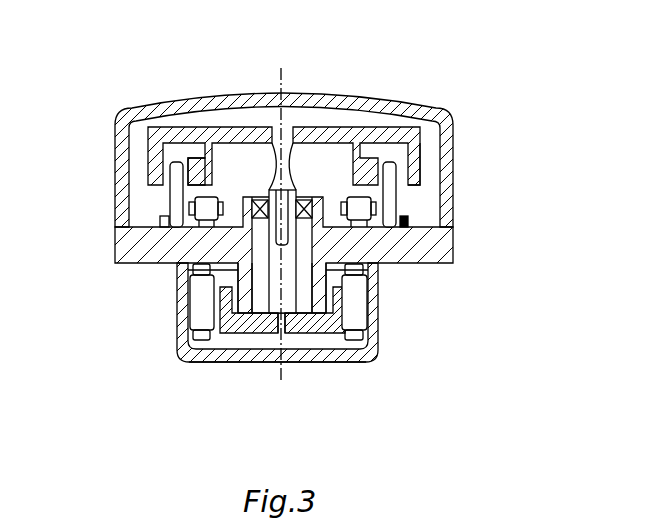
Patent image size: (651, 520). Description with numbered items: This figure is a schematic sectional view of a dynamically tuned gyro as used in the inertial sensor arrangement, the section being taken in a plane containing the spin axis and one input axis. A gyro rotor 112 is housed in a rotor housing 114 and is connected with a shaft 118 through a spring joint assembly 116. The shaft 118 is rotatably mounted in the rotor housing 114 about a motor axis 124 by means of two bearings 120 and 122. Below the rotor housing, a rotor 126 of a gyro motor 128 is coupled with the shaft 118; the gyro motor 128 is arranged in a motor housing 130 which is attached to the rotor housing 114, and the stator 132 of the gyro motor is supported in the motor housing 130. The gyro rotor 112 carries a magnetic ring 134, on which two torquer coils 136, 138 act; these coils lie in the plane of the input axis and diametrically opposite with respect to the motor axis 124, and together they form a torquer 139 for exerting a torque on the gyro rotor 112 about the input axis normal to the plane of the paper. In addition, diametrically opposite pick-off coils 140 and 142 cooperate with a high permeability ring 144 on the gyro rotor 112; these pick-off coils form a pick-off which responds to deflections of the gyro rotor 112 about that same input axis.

The gyro rotor 112 is at (332, 107).
The rotor housing 114 is at (447, 168).
The spring joint assembly 116 is at (291, 142).
The shaft 118 is at (273, 263).
The bearing 120 is at (265, 202).
The bearing 122 is at (248, 325).
The motor axis 124 is at (282, 368).
The rotor of gyro motor 126 is at (353, 363).
The gyro motor 128 is at (380, 294).
The motor housing 130 is at (178, 335).
The stator 132 is at (208, 302).
The magnetic ring 134 is at (187, 163).
The torquer coil 136 is at (168, 192).
The torquer coil 138 is at (390, 205).
The torquer 139 is at (406, 222).
The pick-off coil 140 is at (118, 253).
The pick-off coil 142 is at (430, 266).
The high permeability ring 144 is at (177, 203).